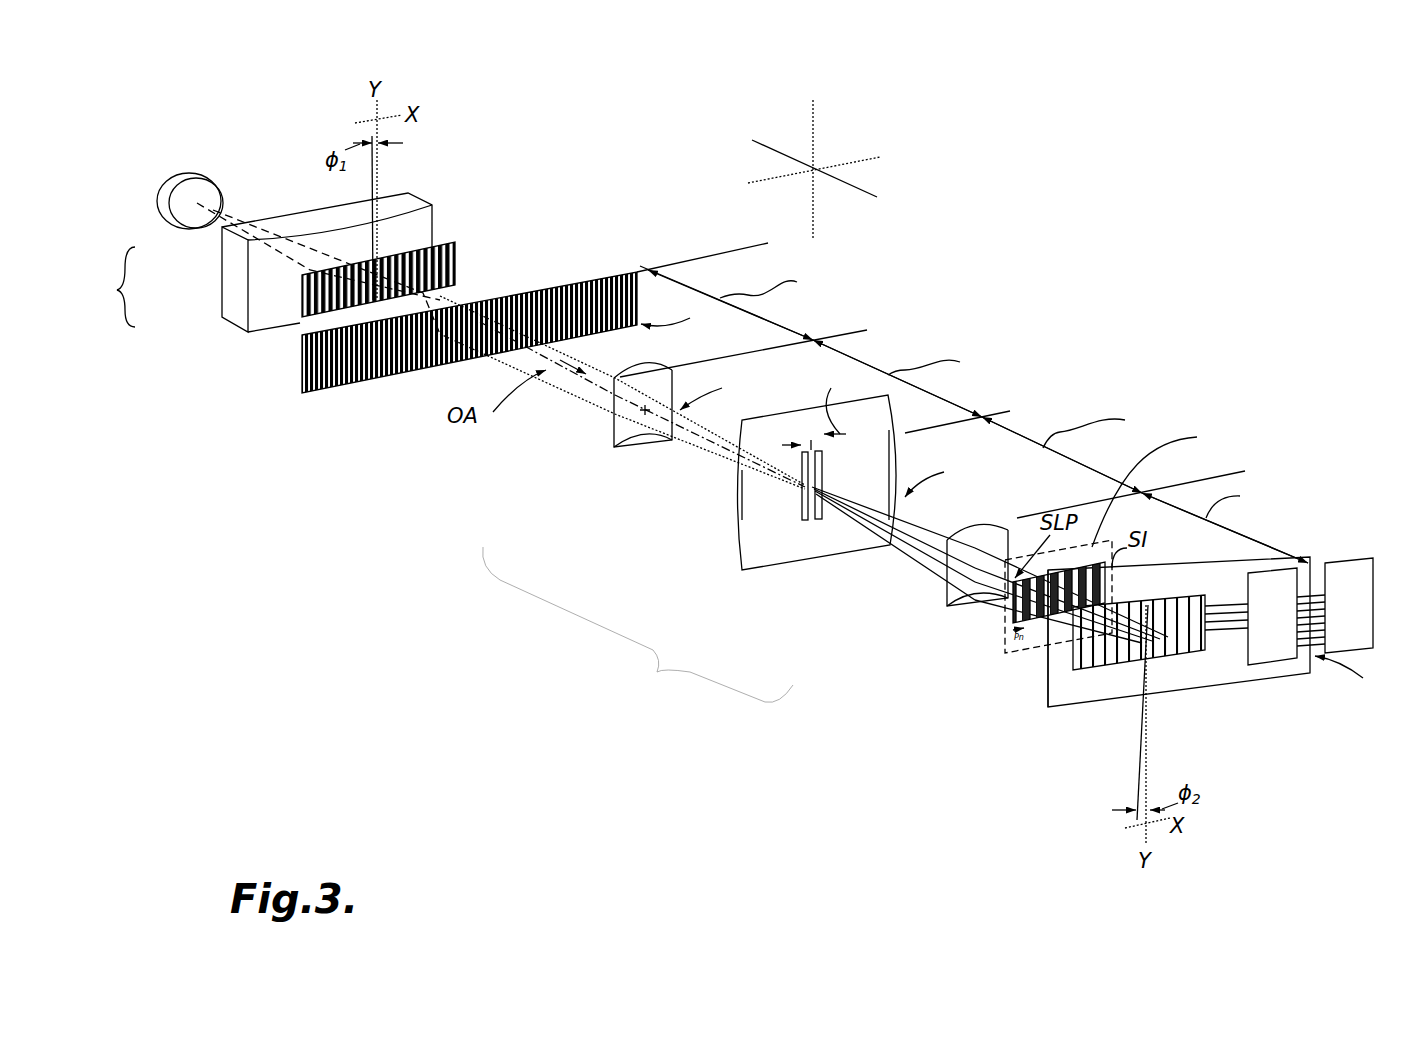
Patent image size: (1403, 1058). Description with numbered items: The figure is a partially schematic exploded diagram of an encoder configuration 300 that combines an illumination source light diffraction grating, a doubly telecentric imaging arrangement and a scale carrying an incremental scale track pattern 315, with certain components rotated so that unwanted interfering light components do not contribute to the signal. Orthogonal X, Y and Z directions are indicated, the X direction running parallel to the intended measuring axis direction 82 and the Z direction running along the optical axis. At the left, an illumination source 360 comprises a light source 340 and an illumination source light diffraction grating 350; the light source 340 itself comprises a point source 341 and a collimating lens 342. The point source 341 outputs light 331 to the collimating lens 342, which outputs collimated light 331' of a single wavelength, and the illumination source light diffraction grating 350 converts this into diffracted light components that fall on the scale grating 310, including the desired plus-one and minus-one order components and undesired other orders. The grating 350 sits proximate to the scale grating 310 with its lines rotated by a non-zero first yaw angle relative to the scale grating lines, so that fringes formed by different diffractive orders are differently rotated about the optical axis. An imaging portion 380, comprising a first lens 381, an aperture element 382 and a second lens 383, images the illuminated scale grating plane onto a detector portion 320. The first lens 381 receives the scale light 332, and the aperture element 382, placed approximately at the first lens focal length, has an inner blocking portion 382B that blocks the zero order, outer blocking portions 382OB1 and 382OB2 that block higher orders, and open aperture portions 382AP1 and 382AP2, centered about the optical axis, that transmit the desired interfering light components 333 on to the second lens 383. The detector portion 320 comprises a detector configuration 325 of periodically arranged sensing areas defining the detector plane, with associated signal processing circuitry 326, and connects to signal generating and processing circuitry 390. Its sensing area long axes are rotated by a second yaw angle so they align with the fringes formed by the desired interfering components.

The encoder configuration 300 is at (1242, 214).
The scale grating 310 is at (641, 247).
The scale track pattern 315 is at (302, 393).
The detector portion 320 is at (1243, 682).
The detector configuration 325 is at (1048, 683).
The signal processing circuitry 326 is at (1272, 662).
The source light 331 is at (318, 241).
The collimated light / diffracted light components 331' is at (617, 364).
The scale light 332 is at (597, 412).
The transmitted interfering light components 333 is at (900, 562).
The light source 340 is at (280, 252).
The point source 341 is at (208, 226).
The collimating lens 342 is at (236, 270).
The illumination source light diffraction grating 350 is at (302, 310).
The illumination source 360 is at (117, 290).
The imaging portion 380 is at (638, 627).
The first lens 381 is at (652, 446).
The aperture element 382 is at (813, 482).
The first open aperture portion 382AP1 is at (800, 511).
The second open aperture portion 382AP2 is at (818, 523).
The inner blocking portion 382B is at (811, 448).
The first outer blocking portion 382OB1 is at (788, 492).
The second outer blocking portion 382OB2 is at (881, 464).
The second lens 383 is at (945, 592).
The signal generating and processing circuitry 390 is at (1340, 558).
The measuring axis direction 82 is at (867, 159).